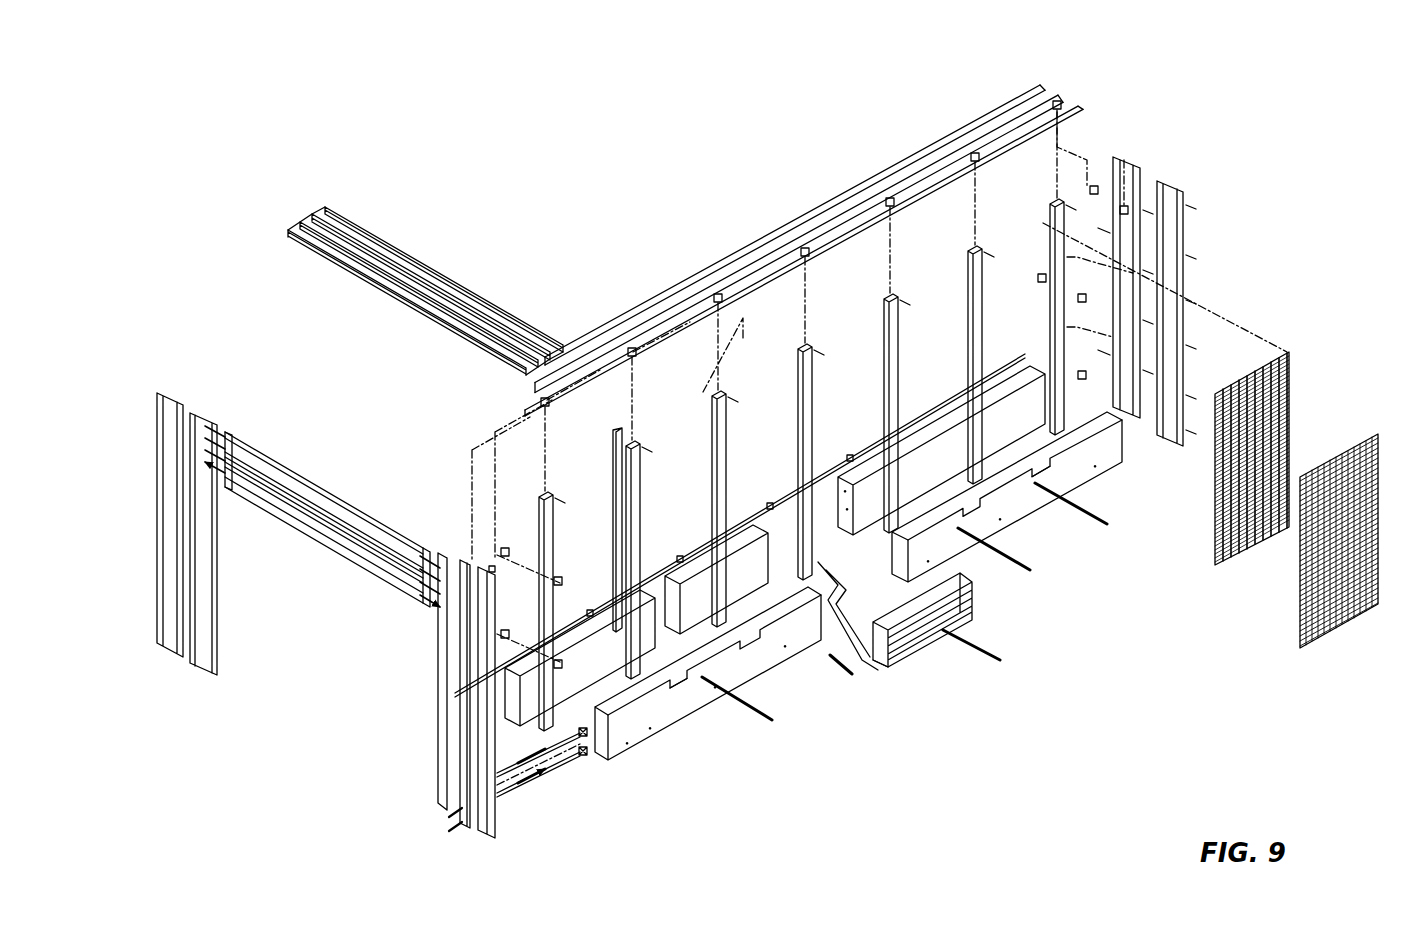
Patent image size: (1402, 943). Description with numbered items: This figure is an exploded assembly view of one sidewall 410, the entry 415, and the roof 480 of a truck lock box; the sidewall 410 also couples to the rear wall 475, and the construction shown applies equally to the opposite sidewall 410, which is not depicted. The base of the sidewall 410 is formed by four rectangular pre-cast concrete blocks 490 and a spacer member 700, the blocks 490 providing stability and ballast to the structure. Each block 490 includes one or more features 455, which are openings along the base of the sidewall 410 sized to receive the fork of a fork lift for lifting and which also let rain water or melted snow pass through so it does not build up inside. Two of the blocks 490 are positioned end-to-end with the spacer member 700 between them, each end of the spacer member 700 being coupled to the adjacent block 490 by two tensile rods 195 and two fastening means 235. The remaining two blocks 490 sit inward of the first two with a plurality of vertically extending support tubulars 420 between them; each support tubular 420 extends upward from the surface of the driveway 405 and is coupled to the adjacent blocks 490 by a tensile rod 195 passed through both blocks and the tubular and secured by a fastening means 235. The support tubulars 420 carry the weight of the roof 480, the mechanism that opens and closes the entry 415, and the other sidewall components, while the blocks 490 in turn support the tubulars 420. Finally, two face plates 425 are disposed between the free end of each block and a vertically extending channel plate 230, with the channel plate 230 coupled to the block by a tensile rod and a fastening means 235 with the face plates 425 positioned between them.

The rear wall 475 is at (1173, 92).
The roof 480 is at (503, 227).
The support tubular 420 is at (898, 358).
The driveway 405 is at (948, 816).
The fastening means 235 is at (654, 554).
The tensile rod 195 is at (882, 556).
The pre-cast concrete block 490 is at (1098, 470).
The feature 455 is at (1043, 523).
The spacer member 700 is at (877, 665).
The face plate 425 is at (590, 762).
The channel plate 230 is at (488, 840).
The entry 415 is at (313, 774).
The sidewall 410 is at (1068, 653).